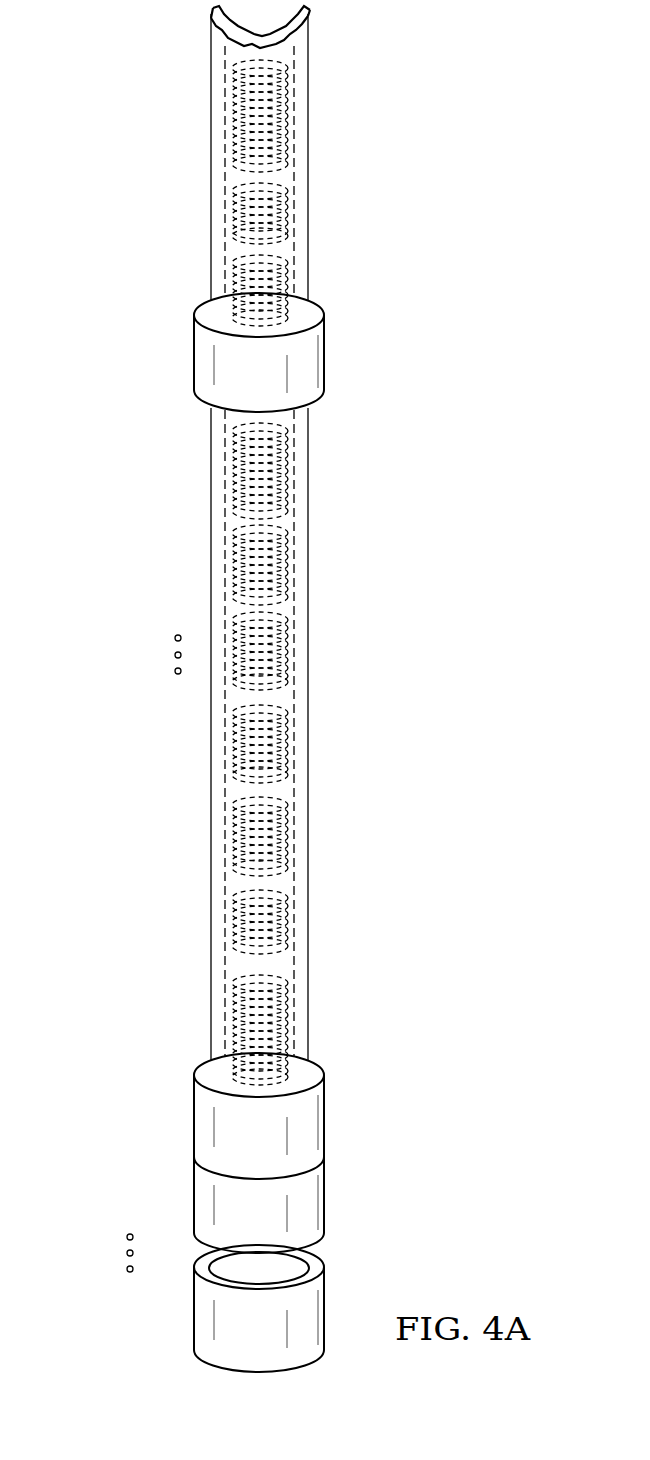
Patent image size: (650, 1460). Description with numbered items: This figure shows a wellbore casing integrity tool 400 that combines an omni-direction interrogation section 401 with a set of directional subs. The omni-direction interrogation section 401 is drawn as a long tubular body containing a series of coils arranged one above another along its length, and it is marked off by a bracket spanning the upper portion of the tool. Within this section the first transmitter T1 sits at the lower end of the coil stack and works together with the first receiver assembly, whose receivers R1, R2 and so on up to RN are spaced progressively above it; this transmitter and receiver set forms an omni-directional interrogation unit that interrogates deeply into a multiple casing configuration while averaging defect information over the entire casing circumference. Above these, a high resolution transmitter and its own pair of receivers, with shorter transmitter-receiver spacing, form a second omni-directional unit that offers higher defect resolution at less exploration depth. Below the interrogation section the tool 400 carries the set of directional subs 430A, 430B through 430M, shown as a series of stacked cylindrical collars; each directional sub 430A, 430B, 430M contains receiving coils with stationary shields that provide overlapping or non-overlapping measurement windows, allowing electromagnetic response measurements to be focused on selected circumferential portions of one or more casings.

The wellbore casing integrity tool 400 is at (408, 110).
The omni-direction interrogation section 401 is at (92, 42).
The directional sub 430A is at (194, 1110).
The directional sub 430B is at (194, 1185).
The directional sub 430M is at (194, 1303).
The first receiver assembly receiver RN is at (225, 471).
The first receiver assembly receiver R2 is at (227, 836).
The first receiver assembly receiver R1 is at (227, 922).
The first transmitter T1 is at (229, 1030).